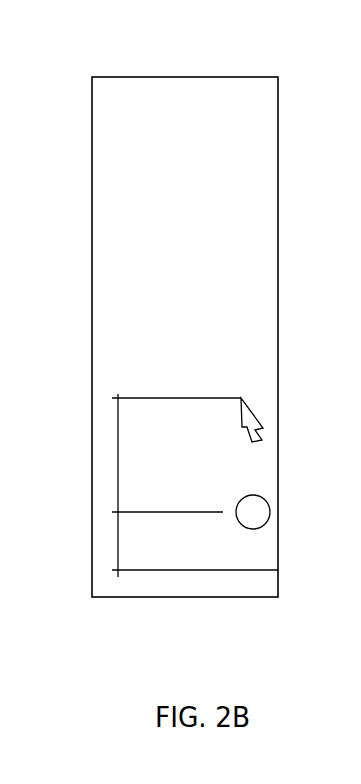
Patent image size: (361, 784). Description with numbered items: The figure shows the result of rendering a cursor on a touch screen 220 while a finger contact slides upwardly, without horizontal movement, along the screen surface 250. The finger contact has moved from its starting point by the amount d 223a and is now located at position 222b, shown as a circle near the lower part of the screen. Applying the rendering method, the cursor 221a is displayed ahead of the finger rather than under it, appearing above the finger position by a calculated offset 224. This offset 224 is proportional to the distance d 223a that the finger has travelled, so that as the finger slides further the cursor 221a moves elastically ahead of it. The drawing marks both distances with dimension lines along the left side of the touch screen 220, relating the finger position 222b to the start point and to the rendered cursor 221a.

The touch screen 220 is at (232, 87).
The screen surface 250 is at (248, 199).
The cursor 221a is at (241, 397).
The offset d1 224 is at (92, 460).
The amount d 223a is at (93, 533).
The position 222b is at (250, 530).